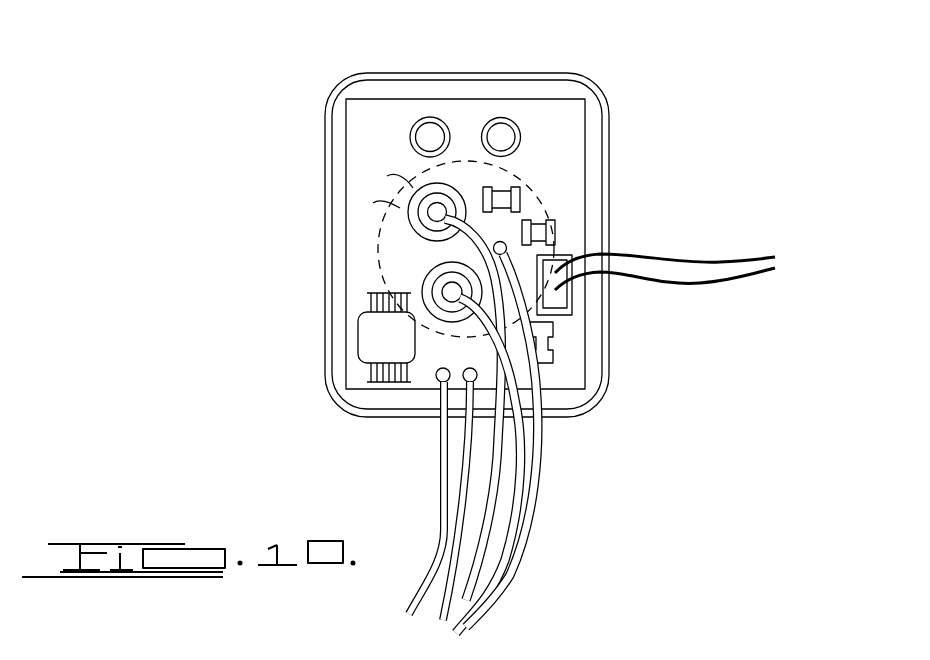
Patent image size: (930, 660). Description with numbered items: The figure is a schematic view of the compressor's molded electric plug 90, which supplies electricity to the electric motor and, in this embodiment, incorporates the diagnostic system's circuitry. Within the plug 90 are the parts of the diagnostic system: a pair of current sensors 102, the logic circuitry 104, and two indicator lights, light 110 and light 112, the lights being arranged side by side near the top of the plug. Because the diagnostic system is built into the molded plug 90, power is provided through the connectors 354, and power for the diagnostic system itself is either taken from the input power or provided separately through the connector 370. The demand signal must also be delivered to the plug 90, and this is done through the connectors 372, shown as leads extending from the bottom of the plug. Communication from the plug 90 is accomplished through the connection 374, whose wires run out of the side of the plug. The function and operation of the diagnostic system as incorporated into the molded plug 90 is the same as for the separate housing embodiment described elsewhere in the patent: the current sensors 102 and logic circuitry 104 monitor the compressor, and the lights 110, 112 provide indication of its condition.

The molded electric plug 90 is at (608, 364).
The current sensors 102 is at (420, 190).
The logic circuitry 104 is at (378, 338).
The light 110 is at (500, 131).
The light 112 is at (427, 131).
The connectors 354 is at (437, 210).
The connector 370 is at (444, 383).
The connectors 372 is at (468, 497).
The connection 374 is at (560, 301).